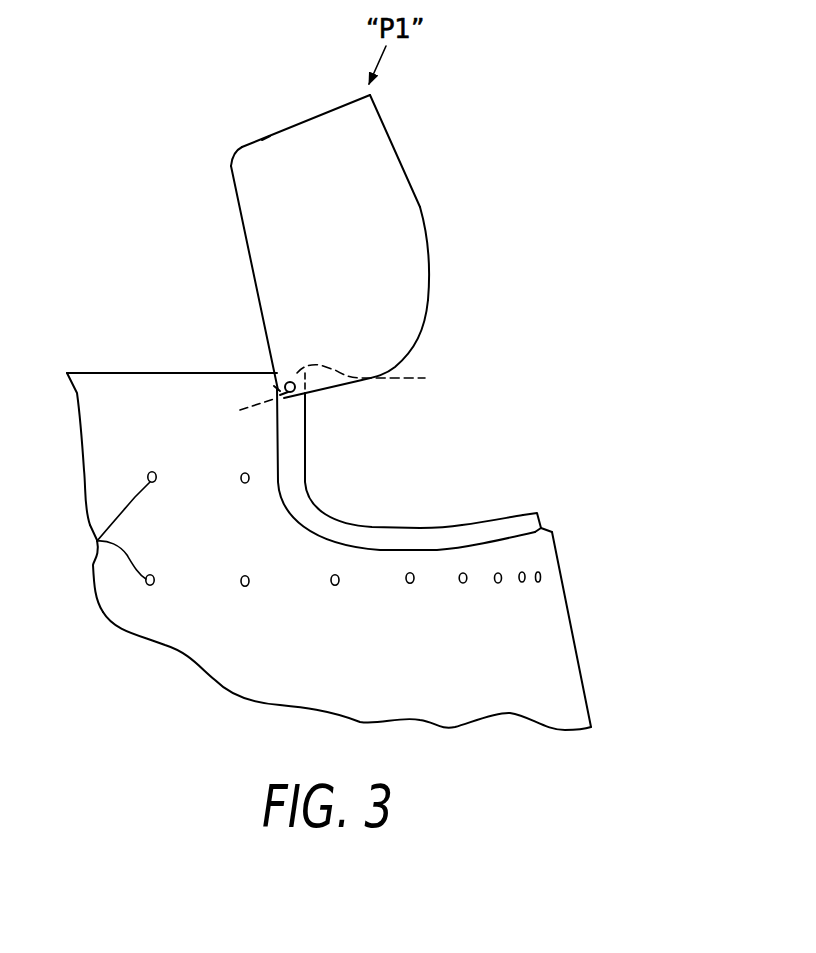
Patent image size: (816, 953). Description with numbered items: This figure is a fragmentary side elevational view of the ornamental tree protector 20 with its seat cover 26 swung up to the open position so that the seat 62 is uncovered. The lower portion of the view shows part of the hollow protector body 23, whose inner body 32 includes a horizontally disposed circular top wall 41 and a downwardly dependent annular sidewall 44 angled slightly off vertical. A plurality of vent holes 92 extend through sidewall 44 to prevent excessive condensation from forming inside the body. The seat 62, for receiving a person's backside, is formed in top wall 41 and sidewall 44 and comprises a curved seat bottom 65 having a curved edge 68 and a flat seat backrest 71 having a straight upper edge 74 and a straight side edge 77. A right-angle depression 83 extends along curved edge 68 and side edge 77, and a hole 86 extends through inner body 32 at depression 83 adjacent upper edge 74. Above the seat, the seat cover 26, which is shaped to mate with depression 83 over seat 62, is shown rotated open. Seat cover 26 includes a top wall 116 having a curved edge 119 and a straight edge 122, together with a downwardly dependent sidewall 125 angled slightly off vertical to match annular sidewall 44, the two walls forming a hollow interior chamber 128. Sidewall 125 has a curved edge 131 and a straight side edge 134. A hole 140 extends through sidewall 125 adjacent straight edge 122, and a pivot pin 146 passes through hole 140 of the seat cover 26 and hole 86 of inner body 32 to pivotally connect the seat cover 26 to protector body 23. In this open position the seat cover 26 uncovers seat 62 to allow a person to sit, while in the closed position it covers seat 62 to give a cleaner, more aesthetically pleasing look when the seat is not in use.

The tree protector 20 is at (550, 170).
The seat cover 26 is at (313, 116).
The sidewall 125 is at (265, 137).
The curved edge 119 is at (231, 163).
The top wall 116 is at (240, 200).
The hollow interior chamber 128 is at (404, 150).
The curved edge 131 is at (421, 210).
The straight side edge 134 is at (410, 350).
The straight edge 122 is at (279, 388).
The hole 140 is at (277, 388).
The upper edge 74 is at (382, 382).
The top wall 41 is at (157, 373).
The protector body 23 is at (87, 369).
The vent holes 92 is at (96, 543).
The inner body 32 is at (110, 618).
The sidewall 44 is at (572, 618).
The hole 86 is at (235, 413).
The pivot pin 146 is at (293, 392).
The seat 62 is at (432, 497).
The side edge 77 is at (307, 462).
The seat backrest 71 is at (309, 430).
The seat bottom 65 is at (470, 522).
The curved edge 68 is at (526, 512).
The right-angle depression 83 is at (545, 528).